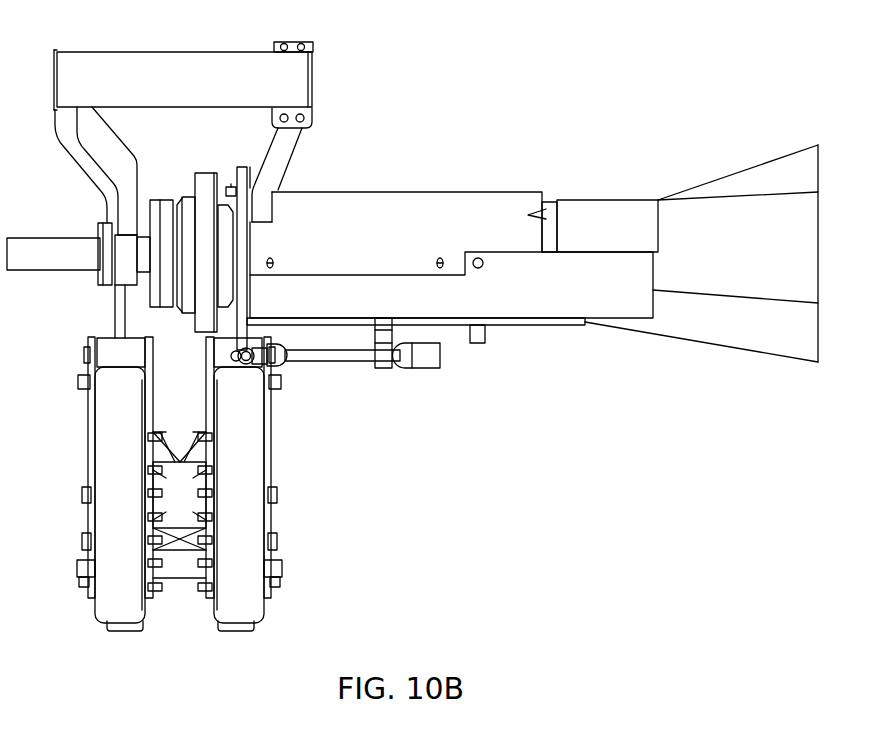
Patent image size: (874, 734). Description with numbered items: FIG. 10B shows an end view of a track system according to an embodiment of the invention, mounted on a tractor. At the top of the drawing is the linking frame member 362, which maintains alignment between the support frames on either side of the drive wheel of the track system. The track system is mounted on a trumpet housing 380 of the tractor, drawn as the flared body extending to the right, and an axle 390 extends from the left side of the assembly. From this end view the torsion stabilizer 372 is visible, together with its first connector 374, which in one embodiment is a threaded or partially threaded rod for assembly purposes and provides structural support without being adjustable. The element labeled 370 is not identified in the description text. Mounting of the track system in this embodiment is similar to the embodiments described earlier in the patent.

The linking frame member 362 is at (183, 52).
The housing body 370 is at (530, 303).
The torsion stabilizer 372 is at (418, 370).
The first connector 374 is at (345, 365).
The trumpet housing 380 is at (732, 178).
The axle 390 is at (52, 237).